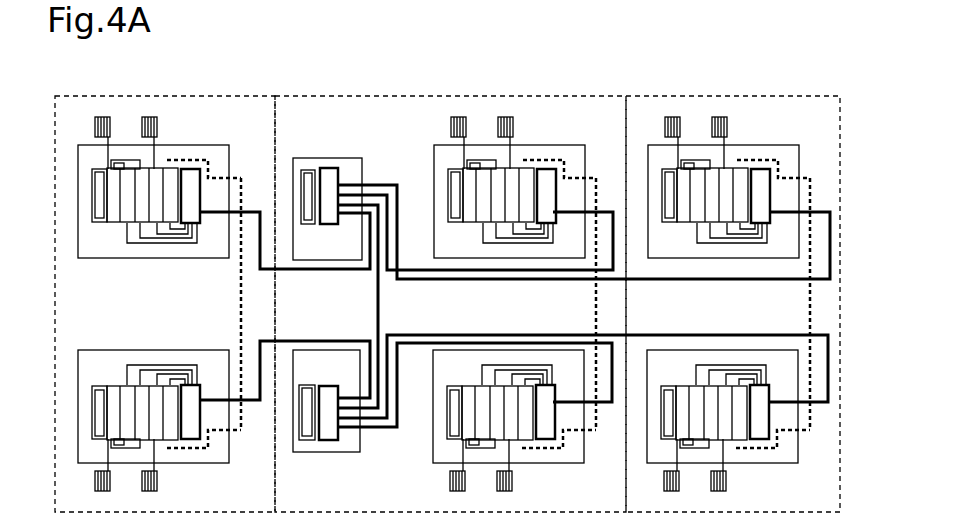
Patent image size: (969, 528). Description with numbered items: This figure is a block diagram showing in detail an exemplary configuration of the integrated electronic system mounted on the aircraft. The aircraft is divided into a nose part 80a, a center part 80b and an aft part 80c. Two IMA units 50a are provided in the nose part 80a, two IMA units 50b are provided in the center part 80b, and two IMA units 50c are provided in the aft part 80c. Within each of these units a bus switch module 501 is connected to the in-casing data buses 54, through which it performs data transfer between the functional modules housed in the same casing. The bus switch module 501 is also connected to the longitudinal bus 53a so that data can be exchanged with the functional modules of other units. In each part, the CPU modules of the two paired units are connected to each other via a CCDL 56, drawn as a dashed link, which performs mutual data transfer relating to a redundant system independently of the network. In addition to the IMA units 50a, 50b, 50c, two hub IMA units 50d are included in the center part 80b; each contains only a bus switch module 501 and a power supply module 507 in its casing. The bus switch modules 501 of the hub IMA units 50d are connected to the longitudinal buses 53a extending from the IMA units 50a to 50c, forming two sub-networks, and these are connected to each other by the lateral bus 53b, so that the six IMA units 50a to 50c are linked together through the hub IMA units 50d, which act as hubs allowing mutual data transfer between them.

The nose part 80a is at (178, 94).
The center part 80b is at (455, 94).
The aft part 80c is at (742, 94).
The IMA unit 50a is at (229, 160).
The IMA unit 50b is at (434, 147).
The IMA unit 50c is at (798, 148).
The hub IMA unit 50d is at (317, 158).
The bus switch module 501 is at (192, 170).
The power supply module 507 is at (98, 219).
The in-casing data bus 54 is at (166, 243).
The CCDL 56 is at (238, 290).
The longitudinal bus 53a is at (416, 264).
The lateral bus 53b is at (380, 306).